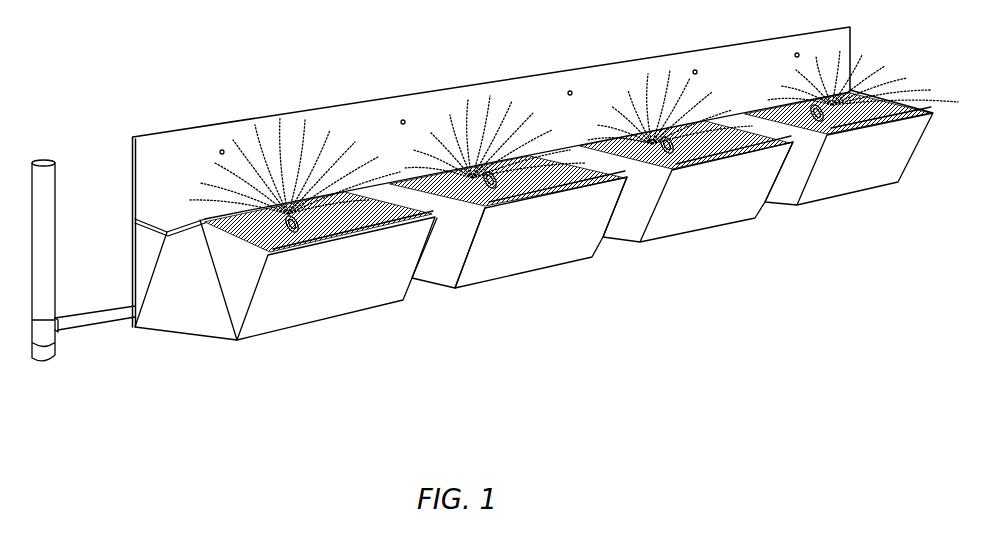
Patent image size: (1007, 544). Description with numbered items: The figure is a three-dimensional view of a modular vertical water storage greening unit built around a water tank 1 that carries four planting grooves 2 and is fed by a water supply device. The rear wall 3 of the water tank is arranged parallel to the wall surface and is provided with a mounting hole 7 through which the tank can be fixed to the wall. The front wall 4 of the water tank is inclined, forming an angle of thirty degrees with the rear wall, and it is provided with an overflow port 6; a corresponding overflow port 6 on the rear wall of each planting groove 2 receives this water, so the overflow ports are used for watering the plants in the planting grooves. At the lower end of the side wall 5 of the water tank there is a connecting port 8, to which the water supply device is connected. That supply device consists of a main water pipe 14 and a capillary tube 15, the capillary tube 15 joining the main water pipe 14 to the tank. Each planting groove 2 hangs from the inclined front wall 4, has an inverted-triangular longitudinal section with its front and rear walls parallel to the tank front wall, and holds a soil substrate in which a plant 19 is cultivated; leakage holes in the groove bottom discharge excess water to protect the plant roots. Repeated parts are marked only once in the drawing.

The water tank 1 is at (710, 92).
The planting groove 2 is at (685, 215).
The rear wall of the water tank 3 is at (285, 110).
The front wall of the water tank 4 is at (185, 240).
The side wall of the water tank 5 is at (143, 258).
The overflow port 6 is at (300, 225).
The mounting hole 7 is at (401, 120).
The connecting port 8 is at (135, 306).
The main water pipe 14 is at (58, 348).
The capillary tube 15 is at (72, 328).
The plant 19 is at (485, 208).